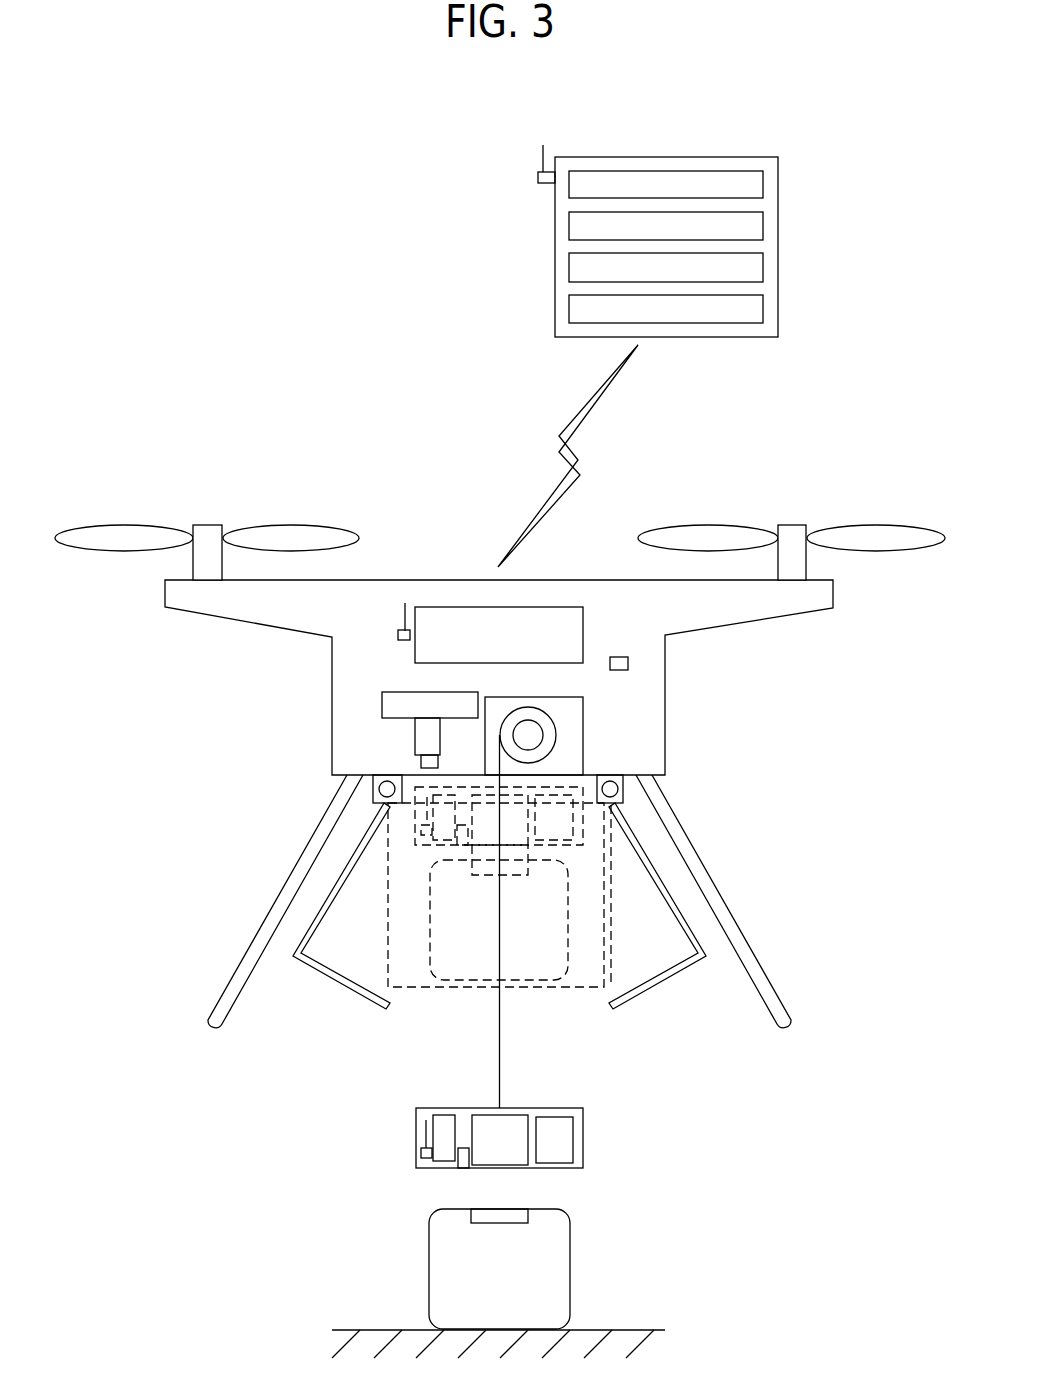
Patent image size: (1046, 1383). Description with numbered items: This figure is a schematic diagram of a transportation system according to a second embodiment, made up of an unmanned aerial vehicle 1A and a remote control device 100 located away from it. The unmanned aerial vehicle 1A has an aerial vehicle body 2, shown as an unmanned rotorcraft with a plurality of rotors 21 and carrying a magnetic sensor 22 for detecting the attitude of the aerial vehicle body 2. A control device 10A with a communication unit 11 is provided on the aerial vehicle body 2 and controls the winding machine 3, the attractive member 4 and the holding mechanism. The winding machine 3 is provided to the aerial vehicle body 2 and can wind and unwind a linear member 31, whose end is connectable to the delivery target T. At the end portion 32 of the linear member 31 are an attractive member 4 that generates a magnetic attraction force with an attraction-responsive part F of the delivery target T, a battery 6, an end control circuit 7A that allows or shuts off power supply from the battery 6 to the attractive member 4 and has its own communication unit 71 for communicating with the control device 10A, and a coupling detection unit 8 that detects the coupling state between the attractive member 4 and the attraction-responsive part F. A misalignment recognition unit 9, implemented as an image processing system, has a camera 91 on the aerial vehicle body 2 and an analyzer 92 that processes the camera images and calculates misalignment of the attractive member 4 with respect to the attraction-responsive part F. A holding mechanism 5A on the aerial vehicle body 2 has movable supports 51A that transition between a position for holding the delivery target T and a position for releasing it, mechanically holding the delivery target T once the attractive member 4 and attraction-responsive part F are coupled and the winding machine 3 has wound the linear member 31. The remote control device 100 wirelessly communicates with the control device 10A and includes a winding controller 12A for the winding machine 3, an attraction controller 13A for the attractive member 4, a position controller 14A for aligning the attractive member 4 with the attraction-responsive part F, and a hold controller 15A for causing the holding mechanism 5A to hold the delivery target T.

The remote control device 100 is at (704, 128).
The winding controller 12A is at (763, 176).
The attraction controller 13A is at (763, 218).
The position controller 14A is at (763, 259).
The hold controller 15A is at (763, 300).
The unmanned aerial vehicle 1A is at (727, 468).
The aerial vehicle body 2 is at (596, 545).
The rotors 21 is at (135, 525).
The control device 10A is at (445, 587).
The communication unit 11 is at (397, 617).
The magnetic sensor 22 is at (628, 663).
The misalignment recognition unit 9 is at (346, 725).
The analyzer 92 is at (381, 707).
The camera 91 is at (415, 735).
The winding machine 3 is at (606, 732).
The holding mechanism 5A is at (501, 908).
The movable supports 51A is at (345, 992).
The linear member 31 is at (501, 1005).
The end portion 32 is at (456, 1104).
The end control circuit 7A is at (433, 1095).
The communication unit 71 is at (424, 1140).
The coupling detection unit 8 is at (462, 1148).
The attractive member 4 is at (510, 1115).
The battery 6 is at (560, 1118).
The attraction-responsive part F is at (470, 1222).
The delivery target T is at (454, 1267).